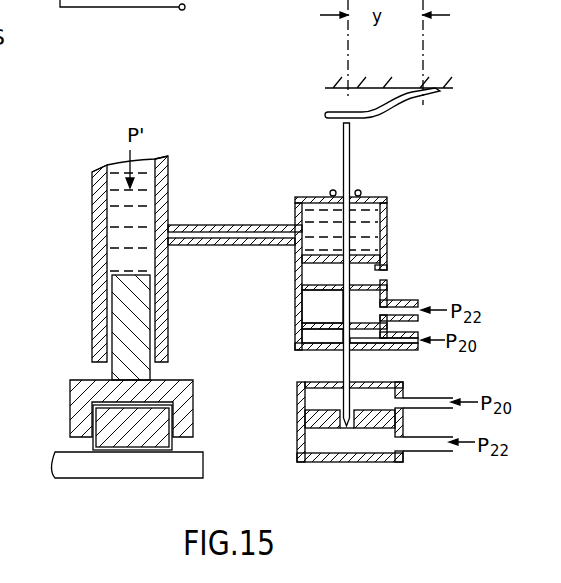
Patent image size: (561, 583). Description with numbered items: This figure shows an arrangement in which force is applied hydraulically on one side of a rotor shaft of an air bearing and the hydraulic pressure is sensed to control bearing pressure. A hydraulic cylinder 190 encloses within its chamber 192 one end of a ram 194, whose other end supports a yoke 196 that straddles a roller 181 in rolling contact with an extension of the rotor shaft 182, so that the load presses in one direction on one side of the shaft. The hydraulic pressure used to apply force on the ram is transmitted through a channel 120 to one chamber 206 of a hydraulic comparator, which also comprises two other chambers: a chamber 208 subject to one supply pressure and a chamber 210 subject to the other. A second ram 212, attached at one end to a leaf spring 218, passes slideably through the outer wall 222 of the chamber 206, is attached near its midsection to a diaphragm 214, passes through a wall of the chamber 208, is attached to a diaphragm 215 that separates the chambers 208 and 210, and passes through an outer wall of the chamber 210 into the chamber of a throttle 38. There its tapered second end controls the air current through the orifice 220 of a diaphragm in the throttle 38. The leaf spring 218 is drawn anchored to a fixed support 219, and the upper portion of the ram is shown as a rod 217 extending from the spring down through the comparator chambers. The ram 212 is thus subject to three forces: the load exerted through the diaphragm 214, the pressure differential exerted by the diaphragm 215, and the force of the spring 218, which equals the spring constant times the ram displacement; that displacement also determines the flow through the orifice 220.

The throttle 38 is at (362, 442).
The channel 120 is at (183, 228).
The roller 181 is at (173, 410).
The shaft 182 is at (116, 470).
The hydraulic cylinder 190 is at (163, 170).
The chamber 192 is at (117, 212).
The ram 194 is at (115, 312).
The yoke 196 is at (78, 400).
The chamber 206 is at (365, 225).
The chamber 208 is at (385, 290).
The chamber 210 is at (372, 343).
The ram 212 is at (342, 352).
The diaphragm 214 is at (315, 253).
The diaphragm 215 is at (307, 328).
The rod 217 is at (342, 128).
The leaf spring 218 is at (400, 103).
The fixed support 219 is at (445, 84).
The orifice 220 is at (342, 428).
The outer wall 222 is at (374, 200).